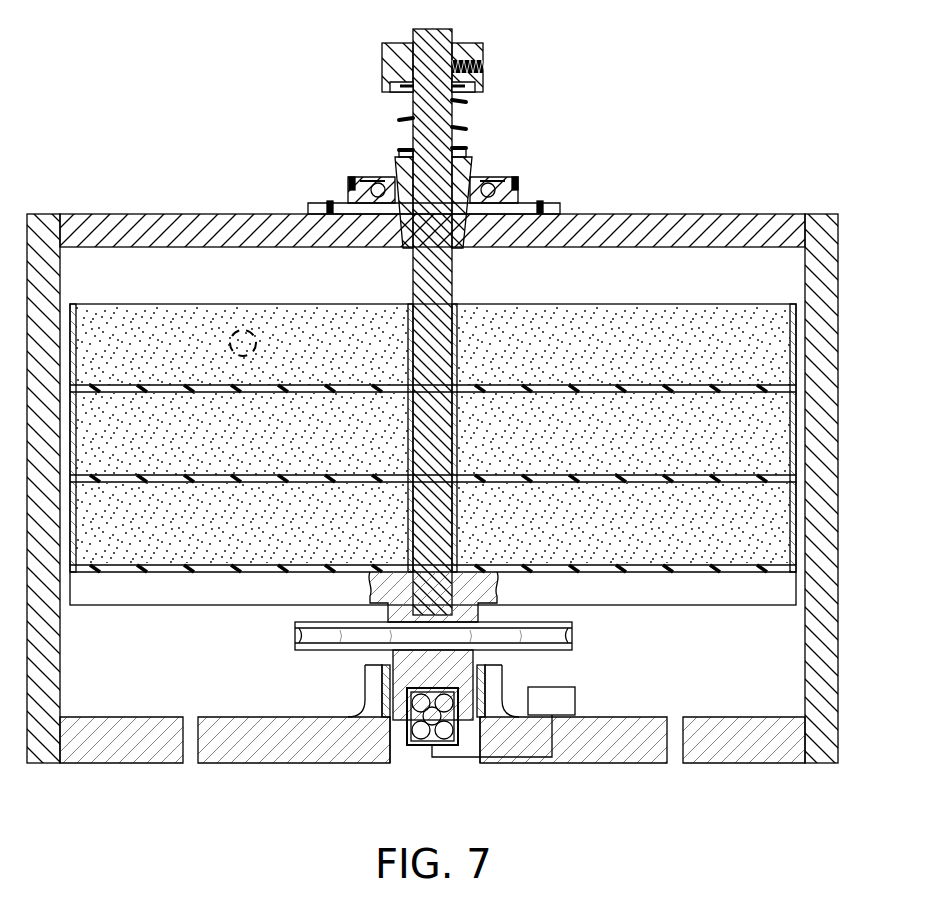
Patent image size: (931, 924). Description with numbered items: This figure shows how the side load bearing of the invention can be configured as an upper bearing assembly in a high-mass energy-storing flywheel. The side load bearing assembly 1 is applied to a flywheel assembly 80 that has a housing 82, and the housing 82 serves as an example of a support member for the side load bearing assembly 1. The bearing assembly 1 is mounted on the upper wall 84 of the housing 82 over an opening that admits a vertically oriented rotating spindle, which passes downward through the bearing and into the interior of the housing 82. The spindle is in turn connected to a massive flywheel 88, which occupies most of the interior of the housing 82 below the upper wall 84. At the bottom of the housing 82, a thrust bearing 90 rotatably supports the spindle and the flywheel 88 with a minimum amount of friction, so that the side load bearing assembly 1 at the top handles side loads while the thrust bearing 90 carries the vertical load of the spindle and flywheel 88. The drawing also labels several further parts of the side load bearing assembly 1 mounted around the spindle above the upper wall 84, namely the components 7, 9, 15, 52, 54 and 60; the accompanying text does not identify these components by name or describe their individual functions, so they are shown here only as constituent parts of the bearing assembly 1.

The side load bearing assembly 1 is at (310, 125).
The left collar 7 is at (392, 165).
The right collar 9 is at (472, 165).
The seal housing 15 is at (332, 188).
The pins 52 is at (466, 127).
The nut 54 is at (378, 53).
The seal 60 is at (400, 95).
The flywheel assembly 80 is at (432, 414).
The housing 82 is at (104, 196).
The upper wall 84 is at (628, 228).
The flywheel 88 is at (248, 442).
The thrust bearing 90 is at (348, 690).